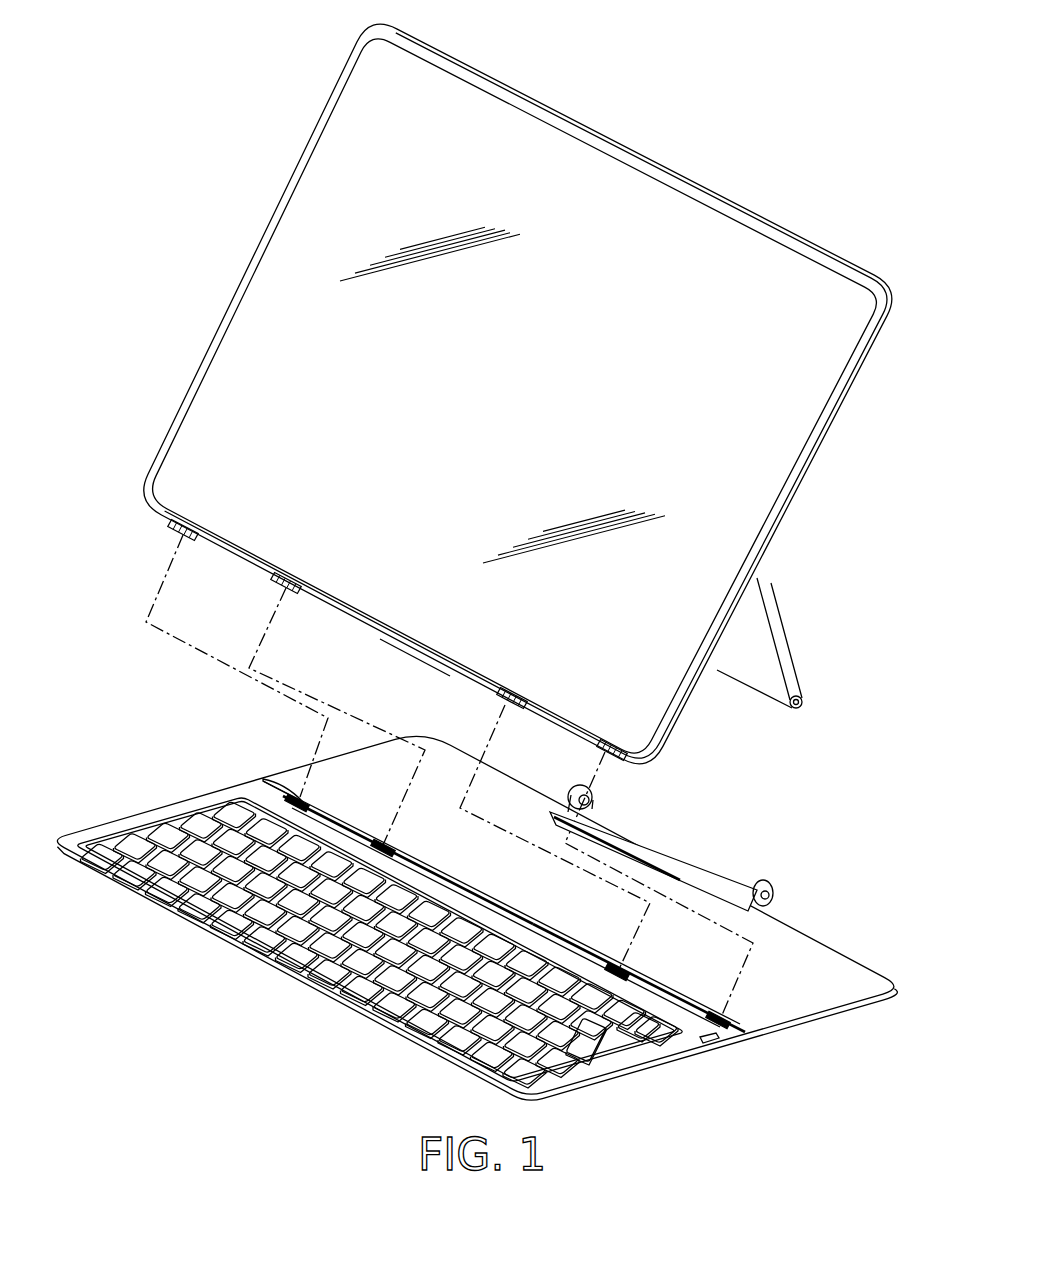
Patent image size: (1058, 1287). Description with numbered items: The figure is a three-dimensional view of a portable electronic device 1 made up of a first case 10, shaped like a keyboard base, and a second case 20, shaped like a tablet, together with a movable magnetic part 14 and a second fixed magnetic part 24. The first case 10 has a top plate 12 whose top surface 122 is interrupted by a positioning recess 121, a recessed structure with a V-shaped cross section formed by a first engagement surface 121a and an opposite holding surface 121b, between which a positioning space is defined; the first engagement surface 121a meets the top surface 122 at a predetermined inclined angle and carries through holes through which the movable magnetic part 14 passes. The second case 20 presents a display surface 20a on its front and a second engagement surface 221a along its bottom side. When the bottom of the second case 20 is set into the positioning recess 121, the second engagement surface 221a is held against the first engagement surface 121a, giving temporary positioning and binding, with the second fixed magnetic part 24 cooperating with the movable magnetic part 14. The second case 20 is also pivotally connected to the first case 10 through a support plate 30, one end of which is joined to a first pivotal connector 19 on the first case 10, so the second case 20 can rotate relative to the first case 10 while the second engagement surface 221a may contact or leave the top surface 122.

The portable electronic device 1 is at (771, 78).
The first case 10 is at (180, 795).
The top plate 12 is at (575, 921).
The positioning recess 121 is at (552, 930).
The first engagement surface 121a is at (533, 914).
The holding surface 121b is at (487, 891).
The top surface 122 is at (799, 952).
The movable magnetic part 14 is at (304, 803).
The first pivotal connector 19 is at (662, 840).
The second case 20 is at (613, 140).
The display surface 20a is at (320, 200).
The second engagement surface 221a is at (409, 666).
The second fixed magnetic part 24 is at (188, 522).
The support plate 30 is at (776, 608).